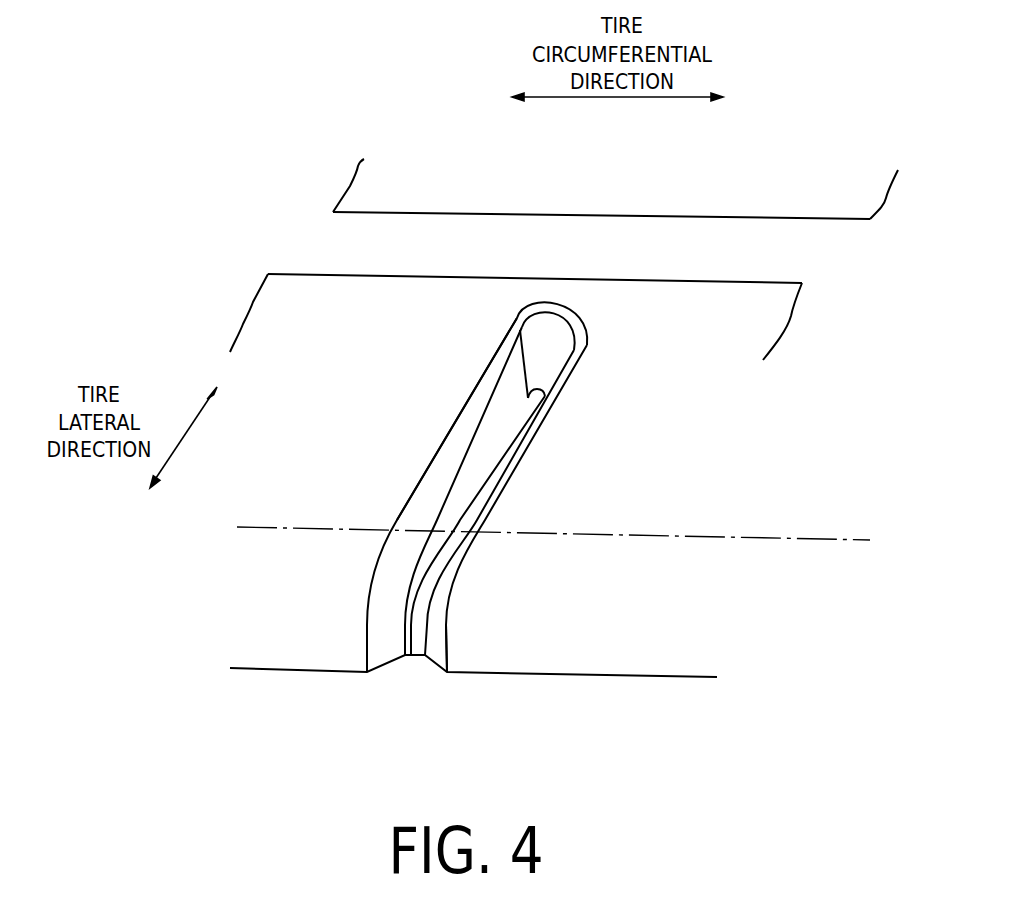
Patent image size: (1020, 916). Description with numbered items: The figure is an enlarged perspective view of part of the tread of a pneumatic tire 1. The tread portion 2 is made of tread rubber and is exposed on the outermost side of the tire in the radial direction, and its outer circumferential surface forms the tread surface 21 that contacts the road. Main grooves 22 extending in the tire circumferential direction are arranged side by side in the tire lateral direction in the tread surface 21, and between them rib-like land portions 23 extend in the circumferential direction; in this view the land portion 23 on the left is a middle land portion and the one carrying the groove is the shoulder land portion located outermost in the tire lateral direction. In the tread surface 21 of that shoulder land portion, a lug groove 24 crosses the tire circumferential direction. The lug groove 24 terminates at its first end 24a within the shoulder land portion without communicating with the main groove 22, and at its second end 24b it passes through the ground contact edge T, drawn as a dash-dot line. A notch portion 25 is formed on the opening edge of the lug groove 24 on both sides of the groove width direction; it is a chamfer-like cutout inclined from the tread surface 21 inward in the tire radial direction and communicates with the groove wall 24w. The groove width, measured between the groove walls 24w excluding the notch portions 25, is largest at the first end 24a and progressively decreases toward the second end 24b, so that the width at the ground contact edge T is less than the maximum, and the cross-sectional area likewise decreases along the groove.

The pneumatic tire 1 is at (814, 170).
The tread portion 2 is at (762, 308).
The tread surface 21 is at (719, 348).
The main groove 22 is at (688, 231).
The land portion 23 is at (374, 190).
The lug groove 24 is at (572, 335).
The first end 24a is at (552, 312).
The second end 24b is at (422, 658).
The groove wall 24w is at (495, 424).
The notch portion 25 is at (430, 485).
The ground contact edge T is at (808, 536).